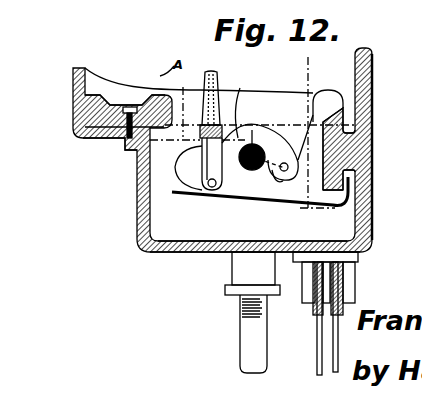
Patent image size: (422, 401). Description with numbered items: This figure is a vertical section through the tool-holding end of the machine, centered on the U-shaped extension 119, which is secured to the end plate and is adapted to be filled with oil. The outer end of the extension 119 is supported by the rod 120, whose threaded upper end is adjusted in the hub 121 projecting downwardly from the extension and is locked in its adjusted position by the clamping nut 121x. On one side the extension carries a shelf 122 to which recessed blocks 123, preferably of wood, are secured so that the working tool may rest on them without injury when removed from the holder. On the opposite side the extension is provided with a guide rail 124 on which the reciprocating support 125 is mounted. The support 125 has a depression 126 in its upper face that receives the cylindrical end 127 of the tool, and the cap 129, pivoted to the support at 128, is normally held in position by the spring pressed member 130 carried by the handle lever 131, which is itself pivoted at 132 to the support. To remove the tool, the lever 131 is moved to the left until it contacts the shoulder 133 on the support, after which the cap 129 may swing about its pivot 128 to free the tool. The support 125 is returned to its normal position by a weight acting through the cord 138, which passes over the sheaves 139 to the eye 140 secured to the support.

The U-shaped extension 119 is at (153, 253).
The supporting rod 120 is at (240, 351).
The hub 121 is at (232, 273).
The clamping nut 121x is at (212, 315).
The shelf 122 is at (104, 139).
The recessed block 123 is at (88, 114).
The guide rail 124 is at (340, 158).
The reciprocating support 125 is at (258, 192).
The depression 126 is at (245, 168).
The cylindrical end of the tool 127 is at (253, 146).
The pivot 128 is at (287, 173).
The cap 129 is at (268, 87).
The spring pressed member 130 is at (202, 139).
The handle lever 131 is at (200, 173).
The lever pivot 132 is at (211, 188).
The shoulder 133 is at (140, 178).
The cord 138 is at (317, 350).
The sheave 139 is at (342, 285).
The eye 140 is at (316, 95).